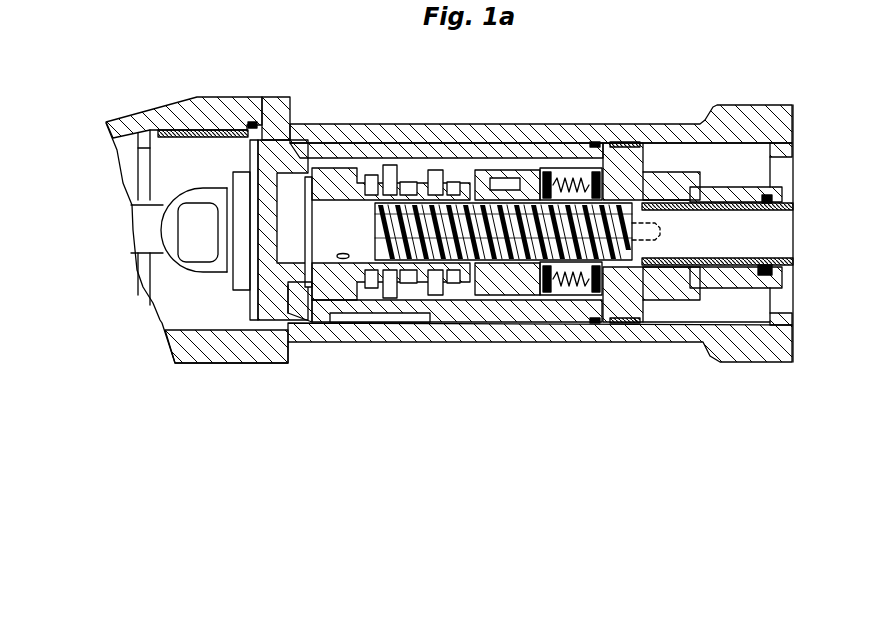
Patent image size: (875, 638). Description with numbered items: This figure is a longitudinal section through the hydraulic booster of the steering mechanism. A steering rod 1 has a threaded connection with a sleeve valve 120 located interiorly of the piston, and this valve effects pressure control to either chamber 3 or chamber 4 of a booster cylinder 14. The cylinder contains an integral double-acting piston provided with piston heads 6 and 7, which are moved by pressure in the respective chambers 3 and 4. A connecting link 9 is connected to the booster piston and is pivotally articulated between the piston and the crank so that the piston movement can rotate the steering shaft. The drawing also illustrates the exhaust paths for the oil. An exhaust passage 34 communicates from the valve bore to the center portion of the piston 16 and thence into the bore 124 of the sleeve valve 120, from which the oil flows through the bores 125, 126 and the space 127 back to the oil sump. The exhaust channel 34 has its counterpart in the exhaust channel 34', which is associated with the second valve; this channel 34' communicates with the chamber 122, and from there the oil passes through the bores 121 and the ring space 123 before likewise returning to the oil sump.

The steering rod 1 is at (748, 240).
The chamber 3 is at (215, 158).
The chamber 4 is at (673, 310).
The piston head 6 is at (285, 312).
The piston head 7 is at (773, 140).
The connecting link 9 is at (140, 227).
The booster cylinder 14 is at (132, 117).
The piston 16 is at (305, 147).
The exhaust passage 34 is at (363, 324).
The exhaust channel 34' is at (517, 159).
The sleeve valve 120 is at (437, 197).
The bores 121 is at (550, 172).
The chamber 122 is at (498, 183).
The ring space 123 is at (543, 290).
The bore 124 is at (350, 203).
The bore 125 is at (421, 265).
The bore 126 is at (657, 207).
The space 127 is at (708, 205).